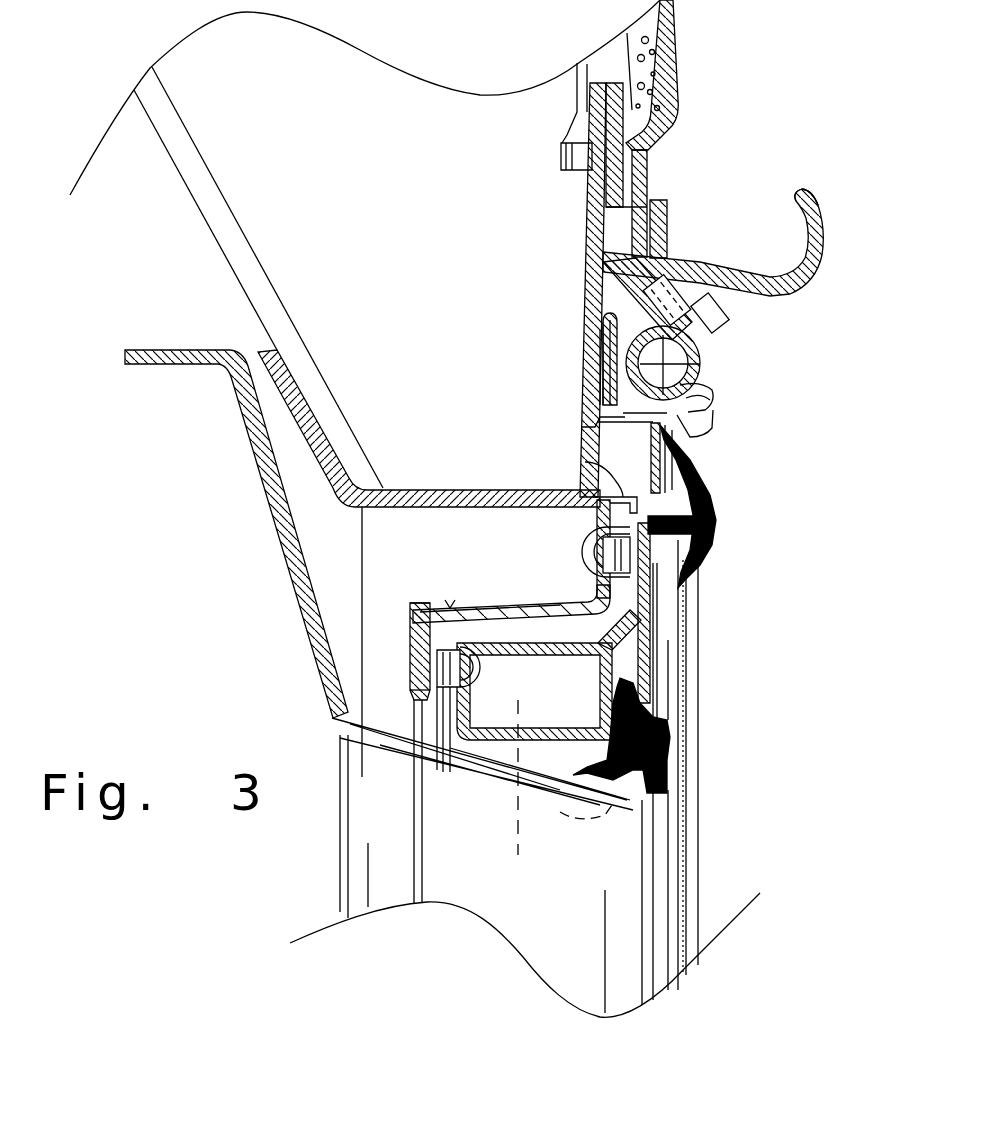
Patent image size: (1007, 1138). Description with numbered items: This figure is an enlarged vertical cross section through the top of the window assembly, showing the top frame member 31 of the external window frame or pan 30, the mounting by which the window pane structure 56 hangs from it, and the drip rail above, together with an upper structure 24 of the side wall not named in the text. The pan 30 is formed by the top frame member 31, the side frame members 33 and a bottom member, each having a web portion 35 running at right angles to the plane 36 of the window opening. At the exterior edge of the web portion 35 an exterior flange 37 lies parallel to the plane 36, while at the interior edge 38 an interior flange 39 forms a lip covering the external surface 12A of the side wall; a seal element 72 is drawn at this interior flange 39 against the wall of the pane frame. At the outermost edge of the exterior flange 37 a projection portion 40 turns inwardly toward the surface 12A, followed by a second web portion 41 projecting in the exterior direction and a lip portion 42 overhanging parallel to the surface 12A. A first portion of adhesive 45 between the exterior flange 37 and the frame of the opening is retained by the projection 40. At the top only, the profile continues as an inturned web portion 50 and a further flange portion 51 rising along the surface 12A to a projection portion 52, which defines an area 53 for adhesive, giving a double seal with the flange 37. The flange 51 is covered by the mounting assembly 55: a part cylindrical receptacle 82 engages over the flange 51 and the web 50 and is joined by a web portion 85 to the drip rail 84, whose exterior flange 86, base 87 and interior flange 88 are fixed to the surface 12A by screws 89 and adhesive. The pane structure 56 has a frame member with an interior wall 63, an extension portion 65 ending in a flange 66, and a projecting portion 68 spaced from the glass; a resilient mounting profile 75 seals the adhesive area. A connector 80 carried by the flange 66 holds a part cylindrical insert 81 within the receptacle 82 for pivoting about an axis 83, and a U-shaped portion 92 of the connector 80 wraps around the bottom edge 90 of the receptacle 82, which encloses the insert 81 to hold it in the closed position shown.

The door frame 24 is at (678, 110).
The external surface 12A is at (590, 141).
The screws 89 is at (578, 165).
The interior flange 88 is at (642, 200).
The base 87 is at (690, 258).
The exterior flange 86 is at (817, 203).
The drip rail 84 is at (835, 243).
The web portion 85 is at (700, 363).
The mounting assembly 55 is at (724, 331).
The axis 83 is at (700, 362).
The part cylindrical insert 81 is at (703, 368).
The U-shaped portion 92 is at (712, 387).
The bottom edge 90 is at (712, 397).
The connector 80 is at (704, 412).
The part cylindrical receptacle 82 is at (598, 270).
The projection portion 52 is at (588, 320).
The area 53 is at (597, 343).
The flange portion 51 is at (613, 357).
The inturned web portion 50 is at (582, 423).
The lip portion 42 is at (657, 452).
The second web portion 41 is at (585, 462).
The projection portion 40 is at (597, 517).
The exterior flange 37 is at (707, 527).
The flange 66 is at (700, 570).
The extension portion 65 is at (653, 598).
The projecting portion 68 is at (657, 667).
The first portion of adhesive 45 is at (597, 593).
The external window frame or pan 30 is at (493, 598).
The side frame members 33 is at (450, 607).
The top frame member 31 is at (547, 610).
The web portion 35 is at (414, 610).
The interior edge 38 is at (423, 643).
The interior flange 39 is at (420, 692).
The bolt shank 72 is at (422, 783).
The interior wall 63 is at (463, 713).
The plane 36 is at (518, 820).
The resilient mounting profile 75 is at (667, 720).
The window pane structure 56 is at (702, 803).